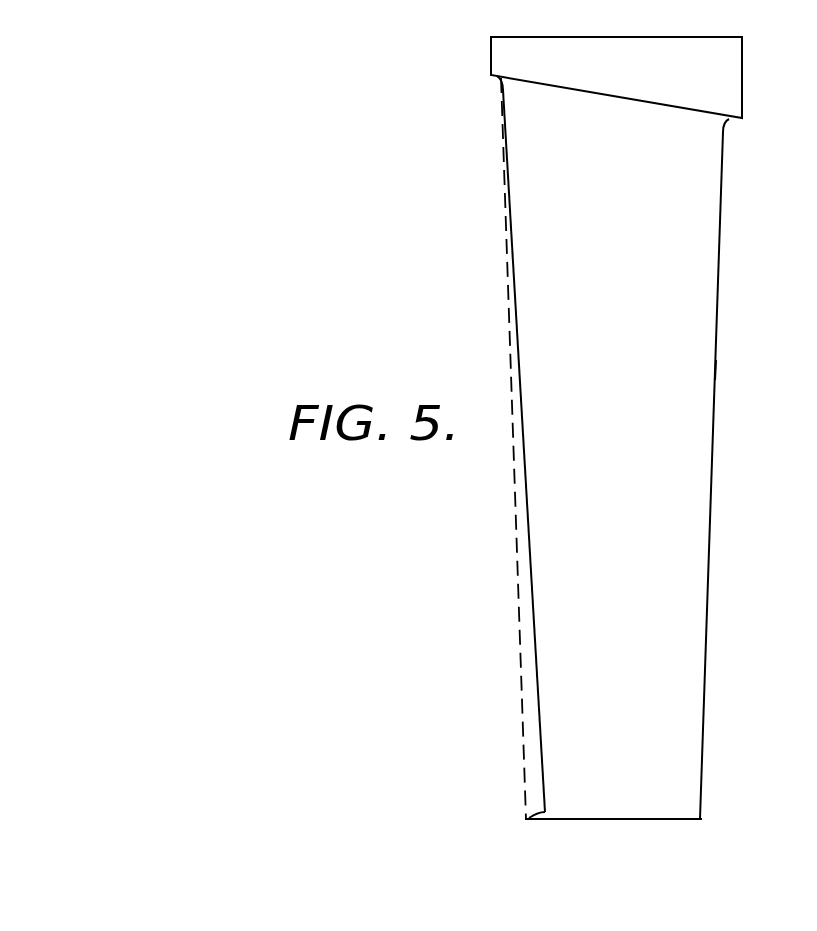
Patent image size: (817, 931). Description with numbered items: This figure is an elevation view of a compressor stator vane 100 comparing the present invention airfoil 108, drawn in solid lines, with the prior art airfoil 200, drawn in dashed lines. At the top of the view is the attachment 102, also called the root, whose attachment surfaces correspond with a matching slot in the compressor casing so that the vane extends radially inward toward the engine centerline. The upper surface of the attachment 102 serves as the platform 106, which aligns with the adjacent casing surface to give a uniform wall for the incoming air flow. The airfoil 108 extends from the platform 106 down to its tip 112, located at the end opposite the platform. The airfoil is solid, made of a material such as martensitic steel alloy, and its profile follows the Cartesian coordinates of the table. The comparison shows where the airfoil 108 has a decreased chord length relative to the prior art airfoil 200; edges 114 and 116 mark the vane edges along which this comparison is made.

The stator vane 100 is at (337, 160).
The attachment 102 is at (741, 80).
The platform 106 is at (535, 85).
The airfoil 108 is at (703, 275).
The tip 112 is at (627, 819).
The suction side surface 114 is at (716, 372).
The leading edge 116 is at (515, 283).
The prior art airfoil 200 is at (518, 596).